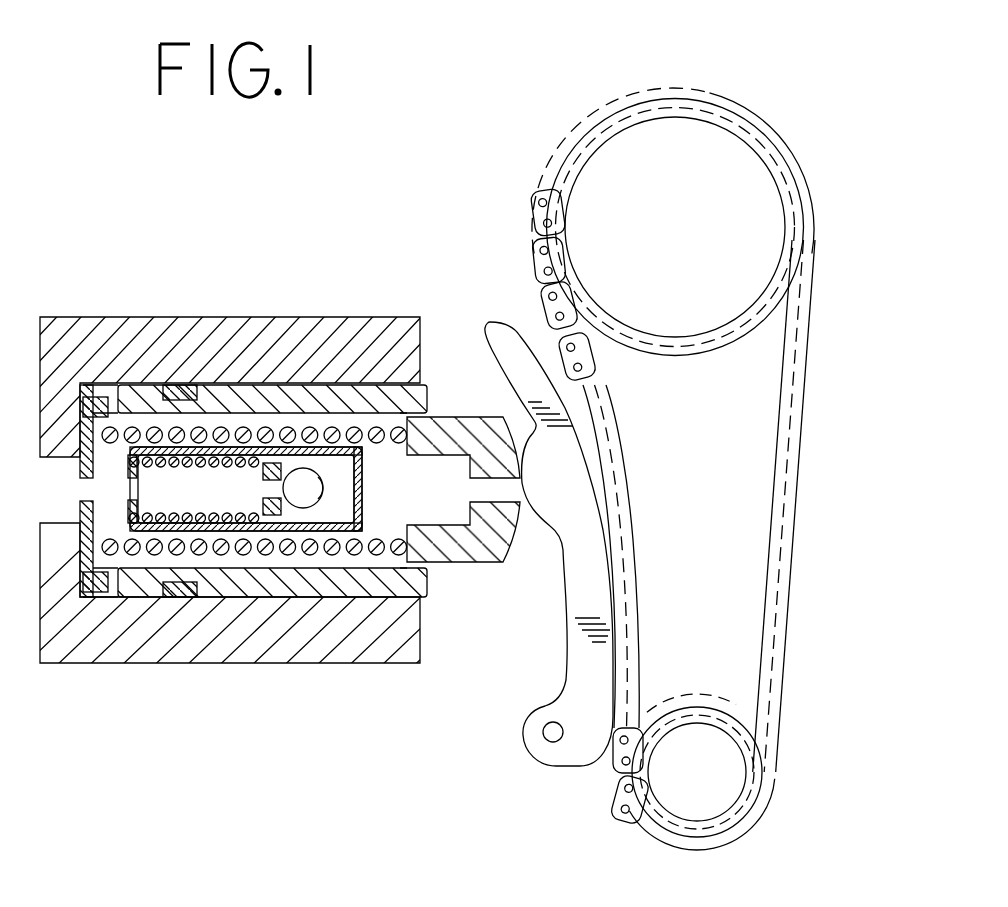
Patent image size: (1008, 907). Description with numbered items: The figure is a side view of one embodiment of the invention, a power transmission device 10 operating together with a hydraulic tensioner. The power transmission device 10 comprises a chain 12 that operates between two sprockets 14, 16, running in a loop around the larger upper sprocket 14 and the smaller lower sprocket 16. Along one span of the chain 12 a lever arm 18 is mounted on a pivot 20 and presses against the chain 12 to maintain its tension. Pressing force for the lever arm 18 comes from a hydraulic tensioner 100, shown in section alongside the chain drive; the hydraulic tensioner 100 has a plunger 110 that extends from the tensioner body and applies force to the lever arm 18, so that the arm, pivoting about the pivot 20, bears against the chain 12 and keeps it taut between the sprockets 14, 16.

The power transmission device 10 is at (784, 688).
The chain 12 is at (798, 468).
The sprocket 14 is at (758, 215).
The sprocket 16 is at (725, 793).
The lever arm 18 is at (562, 707).
The pivot 20 is at (543, 742).
The hydraulic tensioner 100 is at (172, 312).
The plunger 110 is at (452, 415).